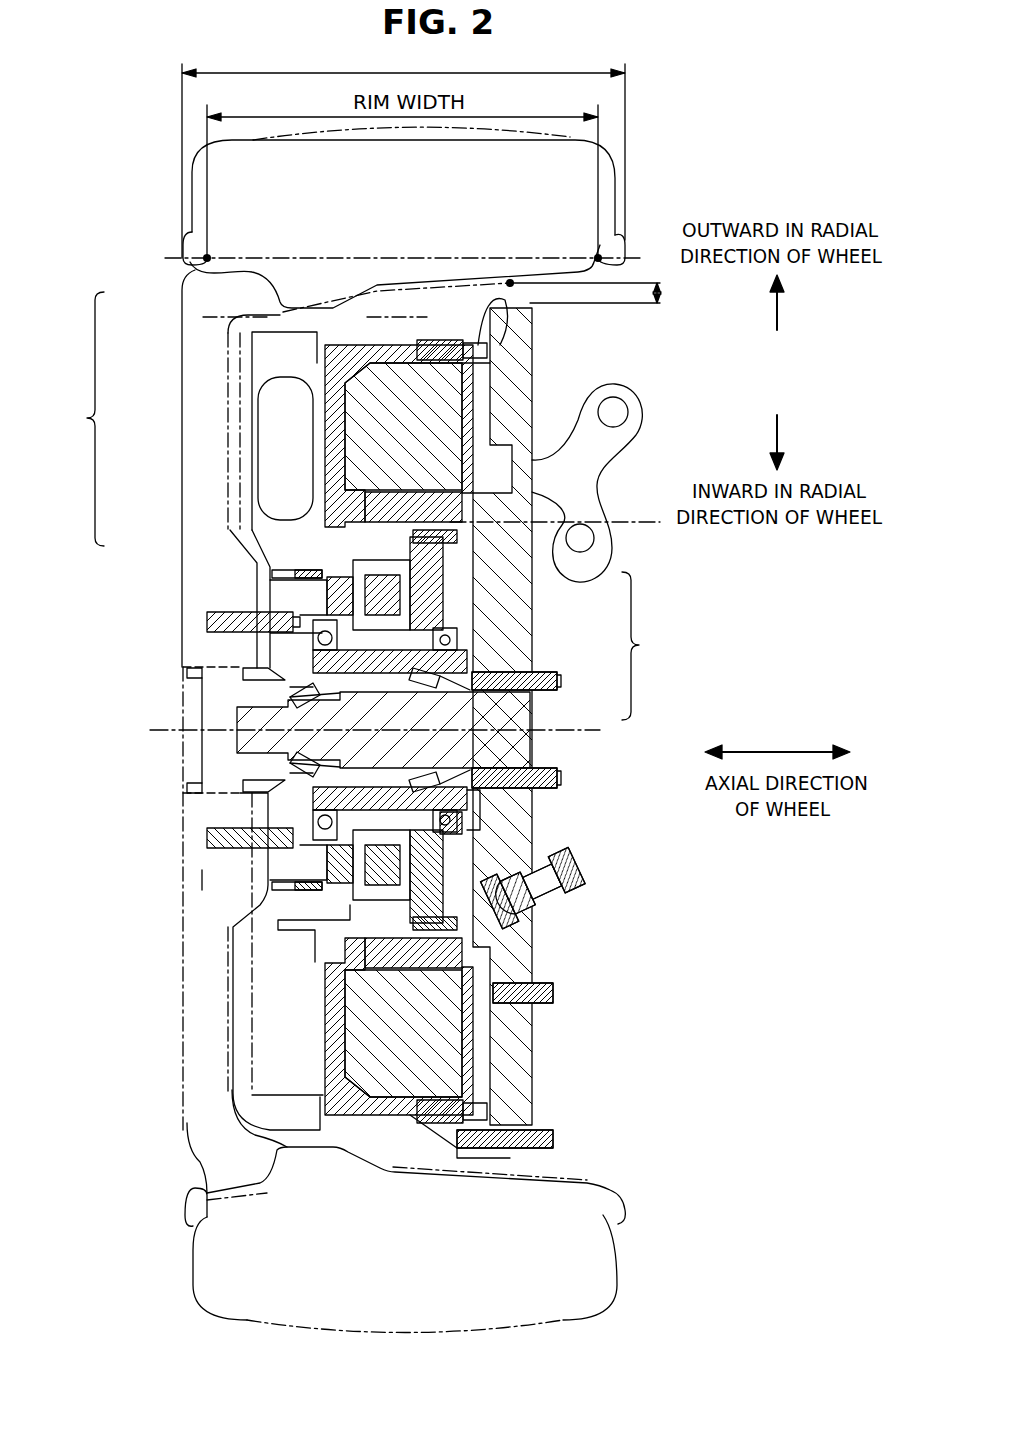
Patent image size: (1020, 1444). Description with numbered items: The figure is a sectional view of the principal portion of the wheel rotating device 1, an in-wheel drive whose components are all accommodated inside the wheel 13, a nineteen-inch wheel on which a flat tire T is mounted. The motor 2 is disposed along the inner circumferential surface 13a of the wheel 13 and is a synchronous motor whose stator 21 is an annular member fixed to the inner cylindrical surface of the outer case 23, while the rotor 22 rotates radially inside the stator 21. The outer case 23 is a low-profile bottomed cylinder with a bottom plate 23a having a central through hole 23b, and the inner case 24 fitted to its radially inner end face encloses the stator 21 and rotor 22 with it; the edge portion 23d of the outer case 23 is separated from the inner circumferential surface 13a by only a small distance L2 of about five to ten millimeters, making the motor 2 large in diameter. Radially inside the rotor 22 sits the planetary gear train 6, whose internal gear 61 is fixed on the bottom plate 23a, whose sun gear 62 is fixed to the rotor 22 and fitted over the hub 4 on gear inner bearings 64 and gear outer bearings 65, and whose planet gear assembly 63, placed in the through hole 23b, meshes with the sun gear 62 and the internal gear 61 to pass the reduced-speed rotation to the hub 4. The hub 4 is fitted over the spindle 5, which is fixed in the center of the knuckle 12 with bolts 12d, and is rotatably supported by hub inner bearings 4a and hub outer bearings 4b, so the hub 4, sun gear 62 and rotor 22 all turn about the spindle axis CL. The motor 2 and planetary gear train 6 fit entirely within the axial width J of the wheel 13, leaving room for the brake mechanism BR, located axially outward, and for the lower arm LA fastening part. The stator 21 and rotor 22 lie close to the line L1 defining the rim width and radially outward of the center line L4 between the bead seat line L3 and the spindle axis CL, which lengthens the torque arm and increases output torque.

The wheel rotating device 1 is at (152, 1028).
The motor 2 is at (85, 419).
The hub 4 is at (290, 685).
The hub inner bearings 4a is at (470, 808).
The hub outer bearings 4b is at (245, 785).
The spindle 5 is at (288, 757).
The planetary gear train 6 is at (643, 646).
The knuckle 12 is at (535, 958).
The bolt 12d is at (560, 778).
The wheel 13 is at (185, 880).
The inner circumferential surface of the wheel 13a is at (585, 295).
The stator 21 is at (357, 460).
The rotor 22 is at (327, 492).
The outer case 23 is at (337, 362).
The bottom plate 23a is at (322, 970).
The through hole 23b is at (280, 900).
The edge portion of the outer case 23d is at (495, 300).
The inner case 24 is at (237, 318).
The internal gear 61 is at (445, 542).
The sun gear 62 is at (460, 630).
The planet gear assembly 63 is at (412, 592).
The gear inner bearings 64 is at (462, 830).
The gear outer bearings 65 is at (330, 648).
The brake mechanism BR is at (256, 550).
The spindle axis CL is at (563, 735).
The width J is at (403, 150).
The line defining rim width L1 is at (160, 255).
The distance L2 is at (599, 316).
The bead seat line L3 is at (488, 377).
The center line L4 is at (650, 520).
The lower arm LA is at (578, 892).
The flat tire T is at (195, 1258).